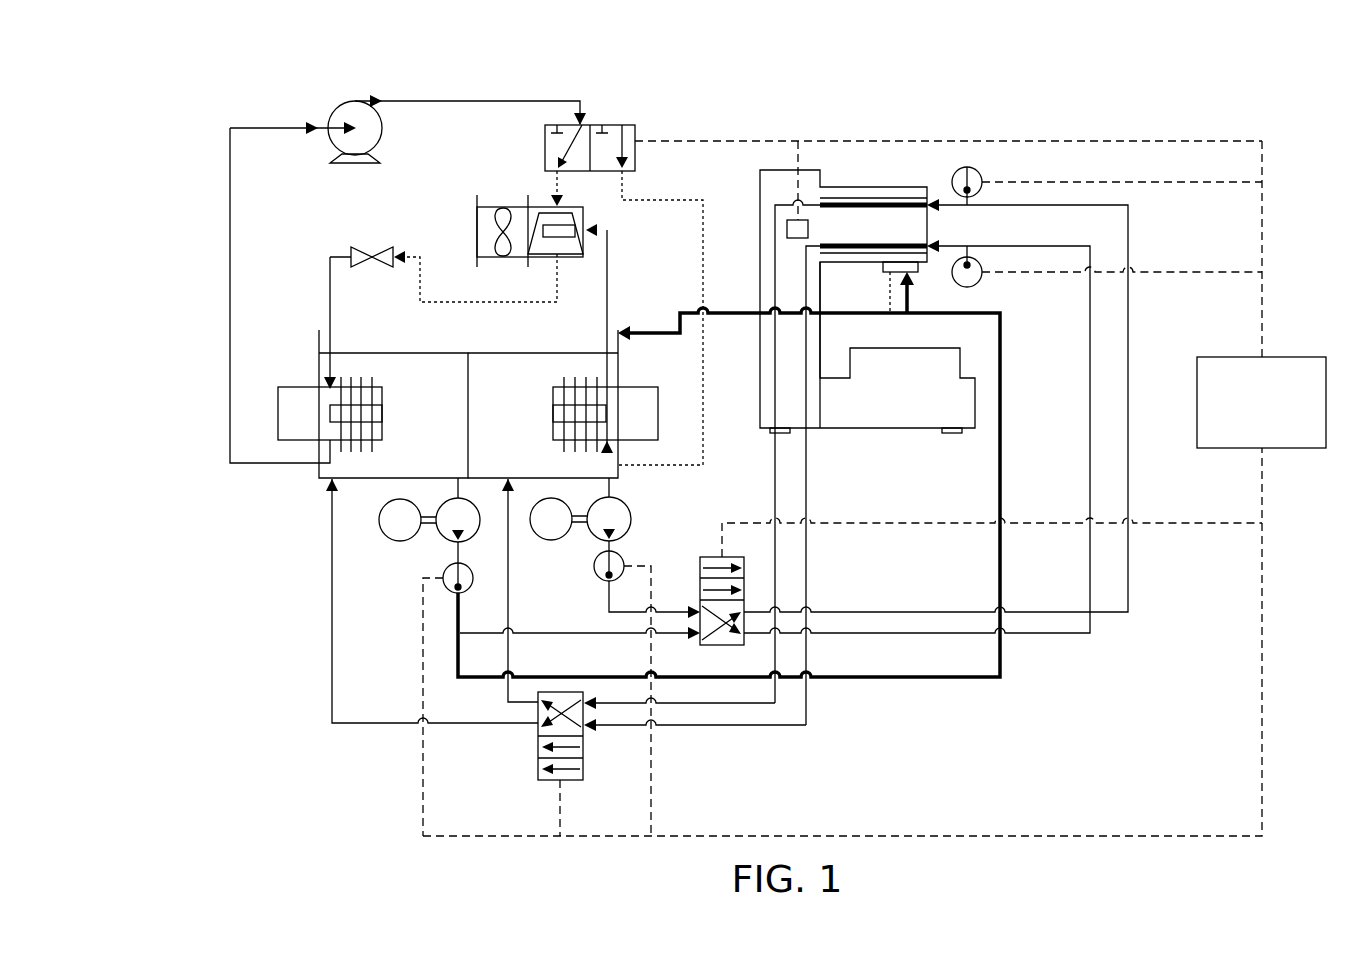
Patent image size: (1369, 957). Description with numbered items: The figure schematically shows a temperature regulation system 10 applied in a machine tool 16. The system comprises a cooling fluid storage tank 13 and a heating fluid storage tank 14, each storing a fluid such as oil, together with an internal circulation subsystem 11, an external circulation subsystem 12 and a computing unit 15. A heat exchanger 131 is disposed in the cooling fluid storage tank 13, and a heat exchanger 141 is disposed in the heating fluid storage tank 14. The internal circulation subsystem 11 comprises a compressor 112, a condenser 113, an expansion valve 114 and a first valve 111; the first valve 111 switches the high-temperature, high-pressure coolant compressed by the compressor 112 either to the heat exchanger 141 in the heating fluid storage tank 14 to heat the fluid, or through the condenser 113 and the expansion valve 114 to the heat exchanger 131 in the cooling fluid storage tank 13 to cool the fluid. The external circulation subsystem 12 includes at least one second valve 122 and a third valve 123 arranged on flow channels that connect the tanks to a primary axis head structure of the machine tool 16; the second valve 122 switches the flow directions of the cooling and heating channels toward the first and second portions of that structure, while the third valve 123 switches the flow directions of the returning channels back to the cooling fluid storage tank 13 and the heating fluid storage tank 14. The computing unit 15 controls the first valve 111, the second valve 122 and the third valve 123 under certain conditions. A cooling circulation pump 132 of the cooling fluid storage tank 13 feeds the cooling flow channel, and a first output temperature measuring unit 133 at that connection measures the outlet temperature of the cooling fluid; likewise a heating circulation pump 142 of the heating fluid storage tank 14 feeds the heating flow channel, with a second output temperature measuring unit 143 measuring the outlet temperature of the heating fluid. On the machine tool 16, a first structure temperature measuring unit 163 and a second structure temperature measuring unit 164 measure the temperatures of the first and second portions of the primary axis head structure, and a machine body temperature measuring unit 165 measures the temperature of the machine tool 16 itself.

The temperature regulation system 10 is at (203, 110).
The internal circulation subsystem 11 is at (563, 87).
The first valve 111 is at (607, 124).
The compressor 112 is at (338, 112).
The condenser 113 is at (493, 205).
The expansion valve 114 is at (356, 252).
The external circulation subsystem 12 is at (403, 762).
The second valve 122 is at (707, 557).
The third valve 123 is at (538, 757).
The cooling fluid storage tank 13 is at (435, 353).
The heat exchanger 131 is at (358, 385).
The cooling circulation pump 132 is at (380, 516).
The first output temperature measuring unit 133 is at (445, 570).
The heating fluid storage tank 14 is at (482, 353).
The heat exchanger 141 is at (578, 385).
The heating circulation pump 142 is at (562, 540).
The second output temperature measuring unit 143 is at (622, 555).
The computing unit 15 is at (1295, 357).
The machine tool 16 is at (770, 172).
The first structure temperature measuring unit 163 is at (978, 168).
The second structure temperature measuring unit 164 is at (980, 286).
The machine body temperature measuring unit 165 is at (787, 228).